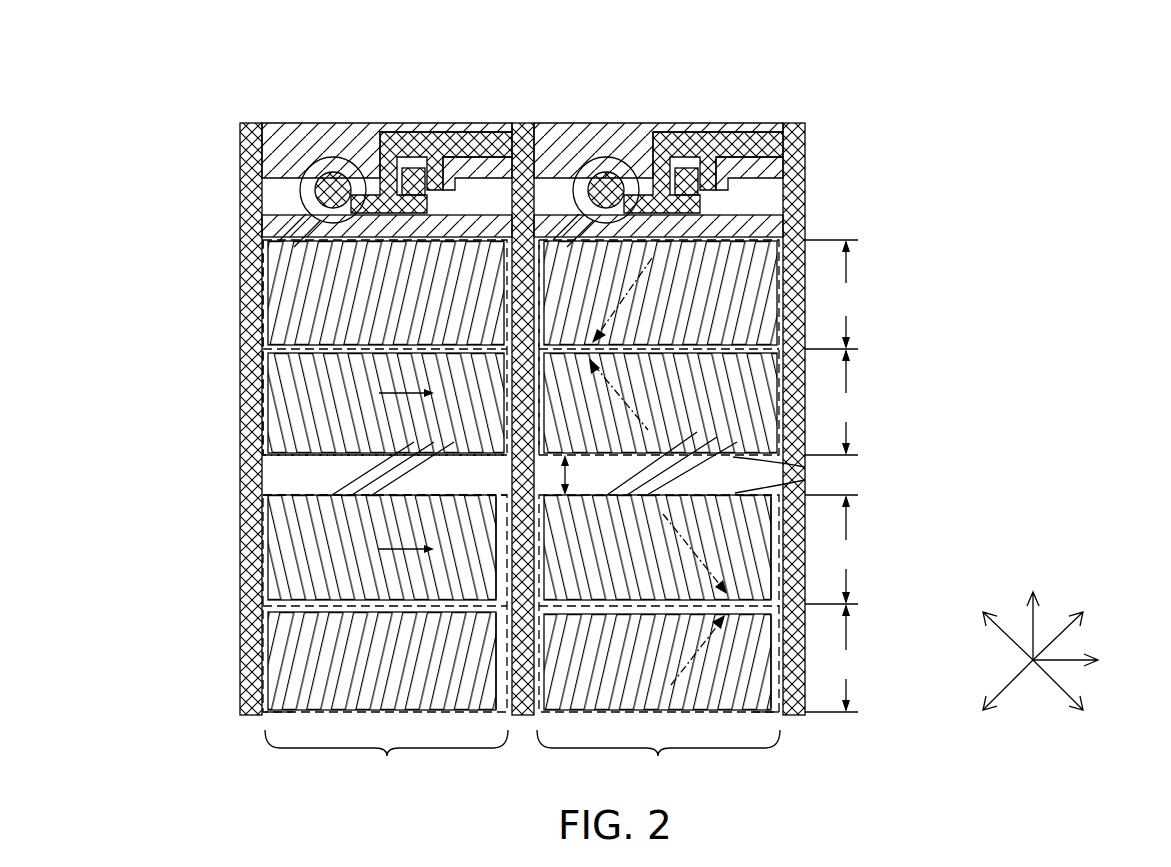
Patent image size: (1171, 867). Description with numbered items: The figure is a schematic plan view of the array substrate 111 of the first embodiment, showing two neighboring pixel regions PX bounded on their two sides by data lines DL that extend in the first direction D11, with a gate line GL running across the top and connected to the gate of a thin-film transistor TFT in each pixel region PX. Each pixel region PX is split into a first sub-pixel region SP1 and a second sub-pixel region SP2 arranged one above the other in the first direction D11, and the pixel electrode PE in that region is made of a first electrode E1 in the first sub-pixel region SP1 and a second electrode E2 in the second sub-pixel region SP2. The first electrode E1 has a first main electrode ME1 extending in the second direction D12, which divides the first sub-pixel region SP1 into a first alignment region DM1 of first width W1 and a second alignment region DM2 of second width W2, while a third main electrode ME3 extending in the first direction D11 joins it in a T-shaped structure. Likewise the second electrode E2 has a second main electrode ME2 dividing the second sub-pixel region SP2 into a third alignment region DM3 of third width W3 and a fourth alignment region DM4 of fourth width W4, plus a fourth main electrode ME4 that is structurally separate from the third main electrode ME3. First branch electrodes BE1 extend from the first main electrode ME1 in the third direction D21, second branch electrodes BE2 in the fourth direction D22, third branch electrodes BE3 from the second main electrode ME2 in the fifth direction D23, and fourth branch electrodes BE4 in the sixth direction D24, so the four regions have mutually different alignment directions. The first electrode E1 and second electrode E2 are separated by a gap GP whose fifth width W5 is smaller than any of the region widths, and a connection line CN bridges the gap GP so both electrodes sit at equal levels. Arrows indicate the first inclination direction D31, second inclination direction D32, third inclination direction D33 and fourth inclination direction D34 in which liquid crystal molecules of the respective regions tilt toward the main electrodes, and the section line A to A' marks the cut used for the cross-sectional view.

The array substrate 111 is at (803, 74).
The data line DL is at (251, 122).
The gate line GL is at (590, 122).
The thin-film transistor TFT is at (428, 123).
The first sub-pixel region SP1 is at (310, 217).
The second sub-pixel region SP2 is at (293, 712).
The first alignment region DM1 is at (733, 238).
The second alignment region DM2 is at (805, 467).
The third alignment region DM3 is at (805, 480).
The fourth alignment region DM4 is at (753, 712).
The pixel electrode PE is at (423, 476).
The first electrode E1 is at (166, 252).
The second electrode E2 is at (166, 512).
The first branch electrodes BE1 is at (292, 265).
The second branch electrodes BE2 is at (305, 400).
The third branch electrodes BE3 is at (317, 533).
The fourth branch electrodes BE4 is at (290, 655).
The first main electrode ME1 is at (298, 350).
The second main electrode ME2 is at (293, 605).
The third main electrode ME3 is at (305, 366).
The fourth main electrode ME4 is at (495, 625).
The gap GP is at (272, 473).
The connection line CN is at (353, 483).
The pixel region PX is at (522, 762).
The section line A is at (406, 384).
The section line A' is at (406, 540).
The first width W1 is at (836, 294).
The second width W2 is at (836, 402).
The third width W3 is at (836, 549).
The fourth width W4 is at (836, 658).
The fifth width W5 is at (586, 475).
The first inclination direction D31 is at (632, 300).
The second inclination direction D32 is at (631, 394).
The third inclination direction D33 is at (686, 554).
The fourth inclination direction D34 is at (685, 650).
The first direction D11 is at (1038, 613).
The second direction D12 is at (1088, 660).
The third direction D21 is at (1074, 622).
The fourth direction D22 is at (1071, 697).
The fifth direction D23 is at (997, 622).
The sixth direction D24 is at (996, 697).